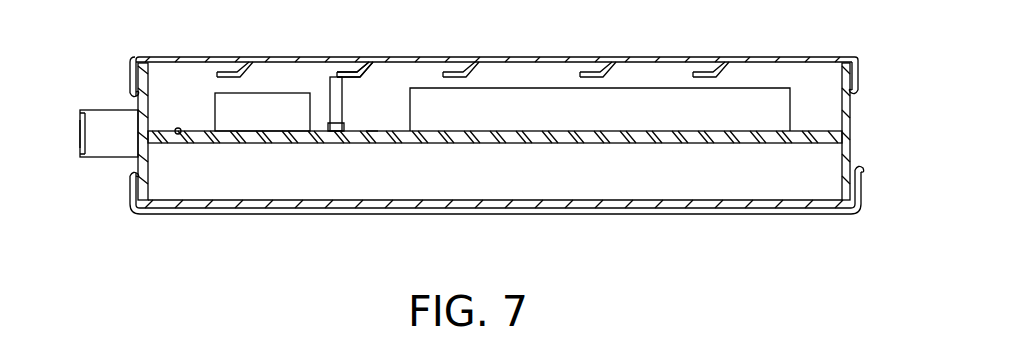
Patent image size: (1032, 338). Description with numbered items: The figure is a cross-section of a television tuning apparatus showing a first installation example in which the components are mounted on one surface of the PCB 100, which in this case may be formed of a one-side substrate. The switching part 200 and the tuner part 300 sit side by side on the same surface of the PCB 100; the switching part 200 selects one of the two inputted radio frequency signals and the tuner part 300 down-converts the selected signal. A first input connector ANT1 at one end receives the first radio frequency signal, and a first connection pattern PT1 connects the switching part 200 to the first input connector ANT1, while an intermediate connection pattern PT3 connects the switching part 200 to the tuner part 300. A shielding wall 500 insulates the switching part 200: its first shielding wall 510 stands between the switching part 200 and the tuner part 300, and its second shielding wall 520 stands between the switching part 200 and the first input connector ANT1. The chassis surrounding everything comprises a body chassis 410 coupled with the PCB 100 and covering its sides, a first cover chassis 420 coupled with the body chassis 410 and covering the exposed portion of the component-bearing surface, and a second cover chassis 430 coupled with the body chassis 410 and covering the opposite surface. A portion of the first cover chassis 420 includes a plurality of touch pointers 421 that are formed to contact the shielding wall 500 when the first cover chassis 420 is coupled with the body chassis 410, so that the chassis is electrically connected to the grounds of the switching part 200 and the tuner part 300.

The PCB 100 is at (387, 138).
The switching part 200 is at (260, 133).
The tuner part 300 is at (533, 88).
The body chassis 410 is at (851, 98).
The first cover chassis 420 is at (787, 54).
The touch pointers 421 is at (344, 72).
The second cover chassis 430 is at (505, 206).
The shielding wall 500 is at (183, 82).
The first shielding wall 510 is at (332, 93).
The second shielding wall 520 is at (210, 88).
The first connection pattern PT1 is at (181, 131).
The intermediate connection pattern PT3 is at (371, 130).
The first input connector ANT1 is at (92, 154).